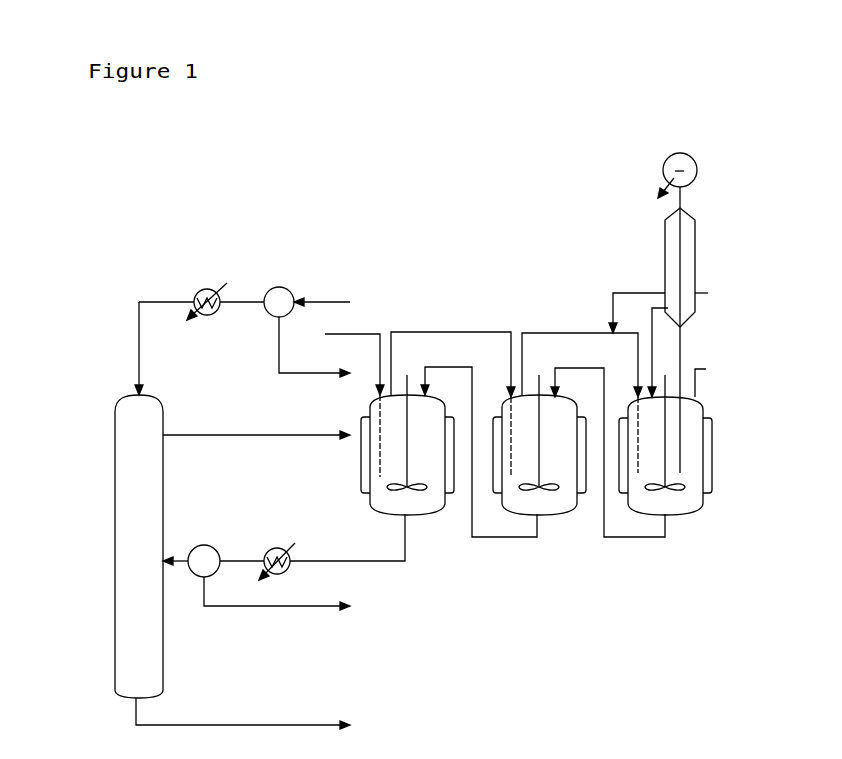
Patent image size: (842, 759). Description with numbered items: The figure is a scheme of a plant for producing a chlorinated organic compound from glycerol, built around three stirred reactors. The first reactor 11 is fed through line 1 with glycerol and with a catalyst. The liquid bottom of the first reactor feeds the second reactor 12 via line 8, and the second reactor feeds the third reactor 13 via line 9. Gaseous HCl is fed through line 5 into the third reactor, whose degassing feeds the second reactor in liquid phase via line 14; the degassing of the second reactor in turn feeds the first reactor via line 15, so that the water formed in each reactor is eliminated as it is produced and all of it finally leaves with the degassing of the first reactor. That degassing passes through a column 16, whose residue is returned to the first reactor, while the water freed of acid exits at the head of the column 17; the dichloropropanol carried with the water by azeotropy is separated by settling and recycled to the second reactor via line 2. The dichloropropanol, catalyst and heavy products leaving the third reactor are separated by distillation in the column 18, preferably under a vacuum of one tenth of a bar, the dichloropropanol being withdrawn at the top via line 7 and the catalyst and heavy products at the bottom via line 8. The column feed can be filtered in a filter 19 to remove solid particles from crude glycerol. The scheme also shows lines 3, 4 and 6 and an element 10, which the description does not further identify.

The feed line 1 is at (720, 363).
The recycle line 2 is at (636, 293).
The product withdrawal line 3 is at (294, 605).
The reactor effluent line 4 is at (356, 559).
The HCl feed line 5 is at (363, 328).
The pump discharge line to column 6 is at (176, 560).
The dichloropropanol withdrawal line 7 is at (252, 433).
The bottoms line 8 is at (294, 722).
The transfer line 9 is at (499, 540).
The pump 10 is at (243, 299).
The first reactor 11 is at (708, 507).
The second reactor 12 is at (541, 472).
The third reactor 13 is at (407, 469).
The degassing line 14 is at (443, 328).
The degassing line 15 is at (548, 330).
The column 16 is at (700, 282).
The head of the column 17 is at (654, 291).
The distillation column 18 is at (103, 560).
The filter 19 is at (207, 543).